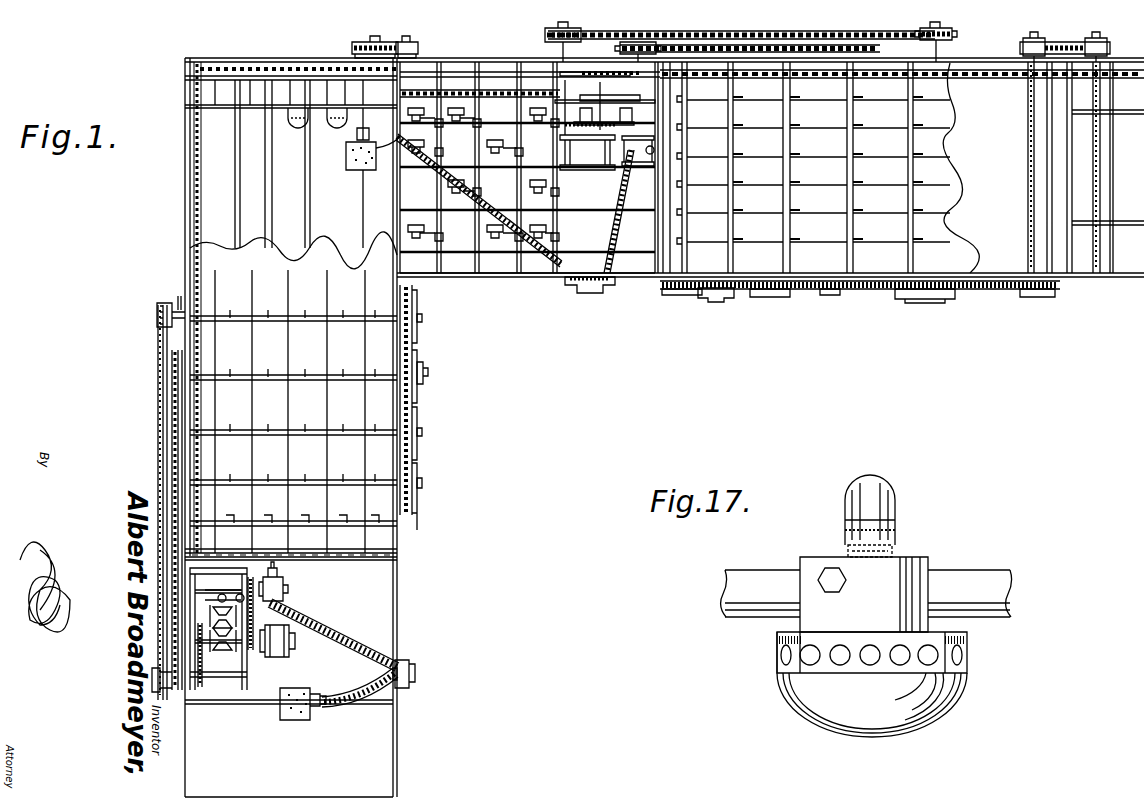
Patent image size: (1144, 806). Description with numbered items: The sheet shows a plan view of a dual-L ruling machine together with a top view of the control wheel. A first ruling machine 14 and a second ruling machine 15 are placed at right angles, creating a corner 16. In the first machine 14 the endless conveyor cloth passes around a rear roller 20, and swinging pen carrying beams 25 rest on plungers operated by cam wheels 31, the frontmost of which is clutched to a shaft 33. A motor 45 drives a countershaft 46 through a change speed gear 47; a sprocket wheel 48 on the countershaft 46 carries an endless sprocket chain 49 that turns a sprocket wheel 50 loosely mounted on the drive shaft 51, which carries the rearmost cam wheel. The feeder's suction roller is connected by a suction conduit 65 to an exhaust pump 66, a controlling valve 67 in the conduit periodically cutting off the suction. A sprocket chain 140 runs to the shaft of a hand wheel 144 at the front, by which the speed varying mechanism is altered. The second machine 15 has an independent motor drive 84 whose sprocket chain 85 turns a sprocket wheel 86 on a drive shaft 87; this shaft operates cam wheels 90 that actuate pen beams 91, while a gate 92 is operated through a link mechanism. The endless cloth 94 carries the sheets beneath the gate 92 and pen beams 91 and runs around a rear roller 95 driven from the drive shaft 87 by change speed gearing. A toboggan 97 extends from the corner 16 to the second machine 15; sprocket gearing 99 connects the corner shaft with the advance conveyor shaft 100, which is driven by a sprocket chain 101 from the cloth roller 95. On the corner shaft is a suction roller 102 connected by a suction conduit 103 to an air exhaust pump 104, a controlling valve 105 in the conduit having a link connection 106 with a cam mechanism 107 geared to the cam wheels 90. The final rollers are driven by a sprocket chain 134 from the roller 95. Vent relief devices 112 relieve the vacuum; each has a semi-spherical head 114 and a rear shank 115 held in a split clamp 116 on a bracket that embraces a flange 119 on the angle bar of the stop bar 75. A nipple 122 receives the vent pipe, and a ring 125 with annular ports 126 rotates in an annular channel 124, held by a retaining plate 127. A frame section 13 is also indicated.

In FIG. 1, the frame section 13 is at (1086, 167).
In FIG. 1, the first ruling machine 14 is at (422, 414).
In FIG. 1, the second ruling machine 15 is at (992, 309).
In FIG. 1, the corner 16 is at (246, 94).
In FIG. 1, the rear roller 20 is at (215, 66).
In FIG. 1, the pen carrying beams 25 is at (307, 322).
In FIG. 1, the cam wheels 31 is at (423, 442).
In FIG. 1, the shaft 33 is at (430, 492).
In FIG. 1, the motor 45 is at (286, 652).
In FIG. 1, the countershaft 46 is at (220, 700).
In FIG. 1, the change speed gear 47 is at (222, 652).
In FIG. 1, the sprocket wheel 48 is at (166, 684).
In FIG. 1, the endless sprocket chain 49 is at (160, 447).
In FIG. 1, the sprocket wheel 50 is at (157, 310).
In FIG. 1, the drive shaft 51 is at (424, 318).
In FIG. 1, the suction conduit 65 is at (338, 632).
In FIG. 1, the exhaust pump 66 is at (285, 588).
In FIG. 1, the controlling valve 67 is at (410, 672).
In FIG. 17, the stop bar 75 is at (1008, 612).
In FIG. 1, the motor drive 84 is at (592, 166).
In FIG. 1, the sprocket chain 85 is at (740, 32).
In FIG. 1, the sprocket wheel 86 is at (948, 34).
In FIG. 1, the drive shaft 87 is at (925, 298).
In FIG. 1, the cam wheels 90 is at (768, 295).
In FIG. 1, the pen beams 91 is at (850, 196).
In FIG. 1, the gate 92 is at (687, 220).
In FIG. 1, the endless cloth 94 is at (956, 145).
In FIG. 1, the rear roller 95 is at (1040, 294).
In FIG. 1, the toboggan 97 is at (490, 277).
In FIG. 1, the sprocket gearing 99 is at (385, 42).
In FIG. 1, the conveyor shaft 100 is at (406, 42).
In FIG. 1, the sprocket chain 101 is at (457, 90).
In FIG. 1, the suction roller 102 is at (352, 168).
In FIG. 1, the suction conduit 103 is at (556, 252).
In FIG. 1, the air exhaust pump 104 is at (652, 160).
In FIG. 1, the controlling valve 105 is at (605, 293).
In FIG. 1, the link connection 106 is at (670, 296).
In FIG. 1, the cam mechanism 107 is at (708, 298).
In FIG. 1, the vent relief devices 112 is at (330, 127).
In FIG. 17, the vent relief devices 112 is at (784, 552).
In FIG. 17, the semi-spherical head 114 is at (908, 722).
In FIG. 17, the rear shank 115 is at (905, 556).
In FIG. 17, the split clamp 116 is at (830, 565).
In FIG. 1, the flange 119 is at (258, 106).
In FIG. 17, the flange 119 is at (1000, 580).
In FIG. 17, the nipple 122 is at (880, 500).
In FIG. 17, the annular channel 124 is at (930, 672).
In FIG. 17, the ring 125 is at (968, 668).
In FIG. 17, the annular ports 126 is at (842, 662).
In FIG. 17, the retaining plate 127 is at (776, 636).
In FIG. 1, the sprocket chain 134 is at (1072, 36).
In FIG. 1, the sprocket chain 140 is at (172, 468).
In FIG. 1, the hand wheel 144 is at (428, 372).